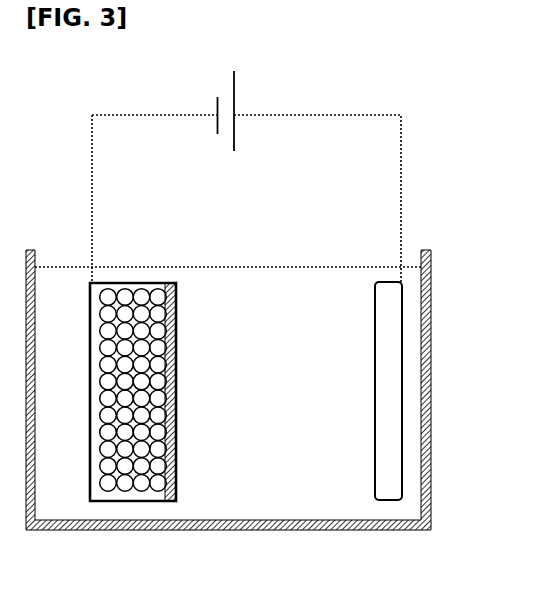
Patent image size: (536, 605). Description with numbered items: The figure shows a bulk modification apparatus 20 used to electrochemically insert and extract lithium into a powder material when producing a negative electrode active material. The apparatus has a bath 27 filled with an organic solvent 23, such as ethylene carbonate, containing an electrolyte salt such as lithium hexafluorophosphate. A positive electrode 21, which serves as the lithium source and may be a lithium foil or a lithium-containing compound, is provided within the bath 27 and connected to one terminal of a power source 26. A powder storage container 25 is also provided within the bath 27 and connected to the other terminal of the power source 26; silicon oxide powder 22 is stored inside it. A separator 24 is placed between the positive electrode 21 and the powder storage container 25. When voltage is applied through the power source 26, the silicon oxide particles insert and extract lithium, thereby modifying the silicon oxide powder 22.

The bulk modification apparatus 20 is at (84, 99).
The positive electrode 21 is at (386, 339).
The silicon oxide powder 22 is at (122, 501).
The organic solvent 23 is at (271, 290).
The separator 24 is at (180, 312).
The powder storage container 25 is at (131, 283).
The power source 26 is at (245, 89).
The bath 27 is at (348, 531).